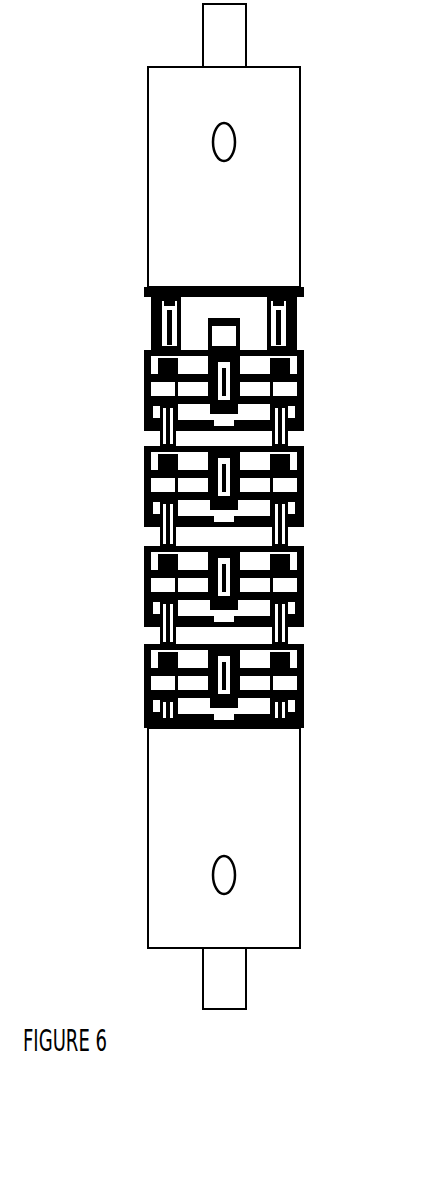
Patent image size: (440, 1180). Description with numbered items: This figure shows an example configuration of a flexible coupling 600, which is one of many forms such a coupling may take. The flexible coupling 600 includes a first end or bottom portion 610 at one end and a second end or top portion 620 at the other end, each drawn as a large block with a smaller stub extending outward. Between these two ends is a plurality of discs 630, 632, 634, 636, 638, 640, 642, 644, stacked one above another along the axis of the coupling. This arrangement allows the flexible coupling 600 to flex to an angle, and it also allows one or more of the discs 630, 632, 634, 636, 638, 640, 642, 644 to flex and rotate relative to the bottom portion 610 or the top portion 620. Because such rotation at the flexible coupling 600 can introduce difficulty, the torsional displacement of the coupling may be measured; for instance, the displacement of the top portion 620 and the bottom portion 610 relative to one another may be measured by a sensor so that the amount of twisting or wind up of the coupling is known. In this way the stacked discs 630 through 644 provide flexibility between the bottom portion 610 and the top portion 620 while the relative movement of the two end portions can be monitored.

The flexible coupling 600 is at (88, 28).
The bottom portion 610 is at (148, 770).
The top portion 620 is at (148, 112).
The disc 630 is at (146, 705).
The disc 632 is at (146, 654).
The disc 634 is at (146, 610).
The disc 636 is at (146, 557).
The disc 638 is at (146, 504).
The disc 640 is at (146, 454).
The disc 642 is at (146, 410).
The disc 644 is at (146, 359).